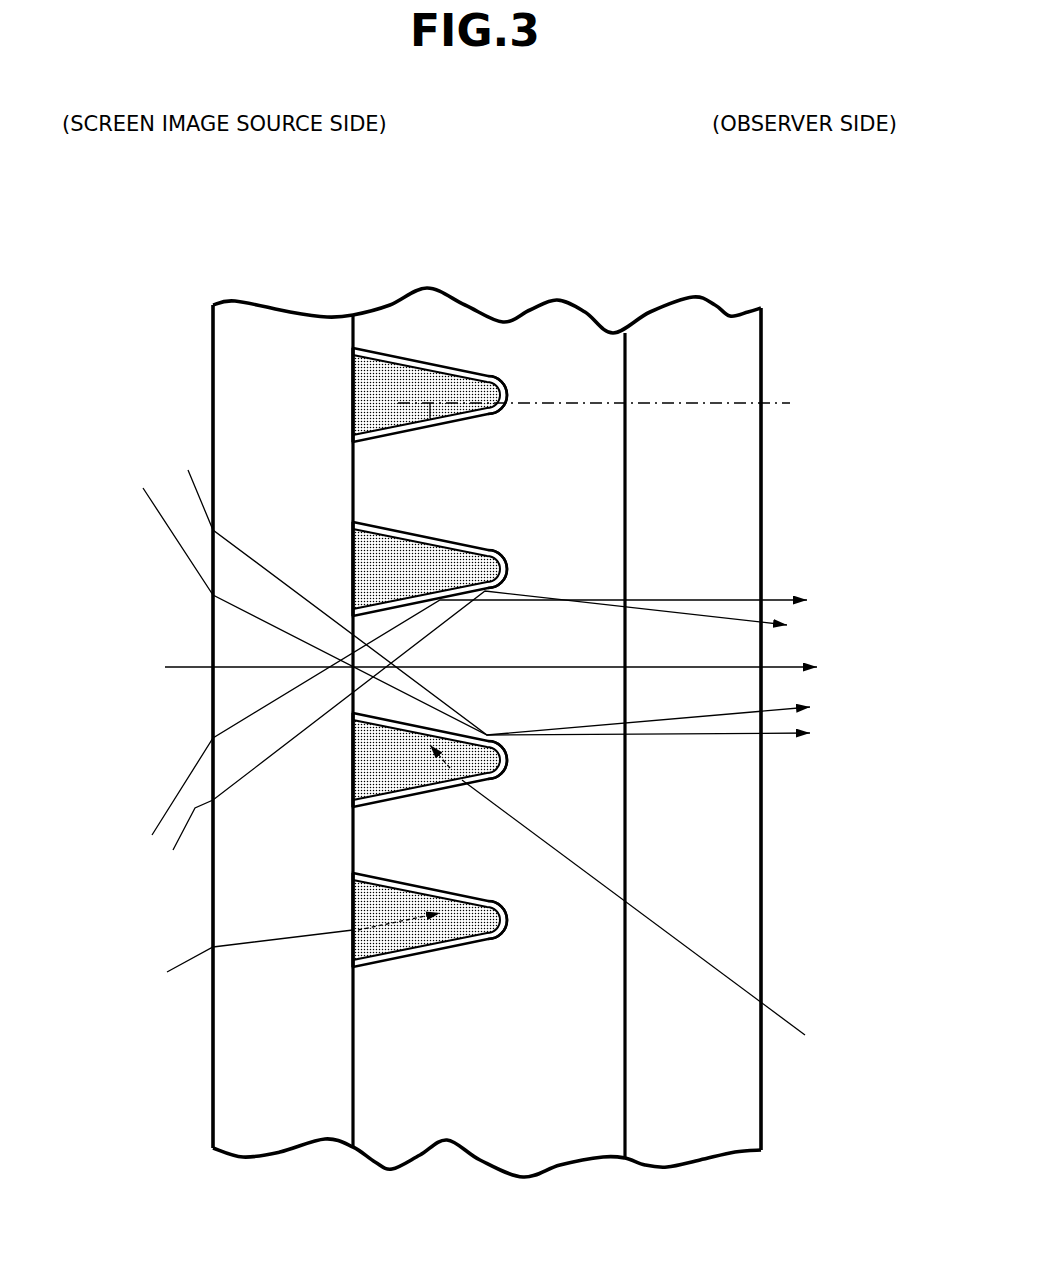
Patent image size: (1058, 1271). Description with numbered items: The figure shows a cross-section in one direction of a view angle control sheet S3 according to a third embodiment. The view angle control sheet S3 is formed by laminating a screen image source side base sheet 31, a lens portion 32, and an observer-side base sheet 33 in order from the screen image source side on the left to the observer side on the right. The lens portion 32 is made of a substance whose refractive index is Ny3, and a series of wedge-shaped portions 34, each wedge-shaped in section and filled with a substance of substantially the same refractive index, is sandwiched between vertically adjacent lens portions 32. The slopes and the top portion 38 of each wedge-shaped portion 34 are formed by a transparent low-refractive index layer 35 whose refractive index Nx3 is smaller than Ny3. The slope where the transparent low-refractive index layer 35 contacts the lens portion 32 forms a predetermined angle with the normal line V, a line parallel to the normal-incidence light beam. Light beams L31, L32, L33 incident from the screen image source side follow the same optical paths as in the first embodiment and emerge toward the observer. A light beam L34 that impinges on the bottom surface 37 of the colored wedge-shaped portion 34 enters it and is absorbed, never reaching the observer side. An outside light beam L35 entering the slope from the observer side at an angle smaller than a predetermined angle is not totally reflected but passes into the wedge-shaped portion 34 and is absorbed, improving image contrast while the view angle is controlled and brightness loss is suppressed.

The view angle control sheet S3 is at (753, 256).
The screen image source side base sheet 31 is at (265, 347).
The lens portion 32 is at (502, 340).
The observer-side base sheet 33 is at (670, 335).
The wedge-shaped portion 34 is at (388, 385).
The transparent low-refractive index layer 35 is at (437, 360).
The bottom surface 37 is at (353, 405).
The top portion 38 is at (506, 395).
The normal line V is at (608, 401).
The light beam L31 is at (517, 667).
The light beam L32 is at (511, 711).
The light beam L33 is at (521, 720).
The light beam L34 is at (270, 948).
The outside light beam L35 is at (505, 764).